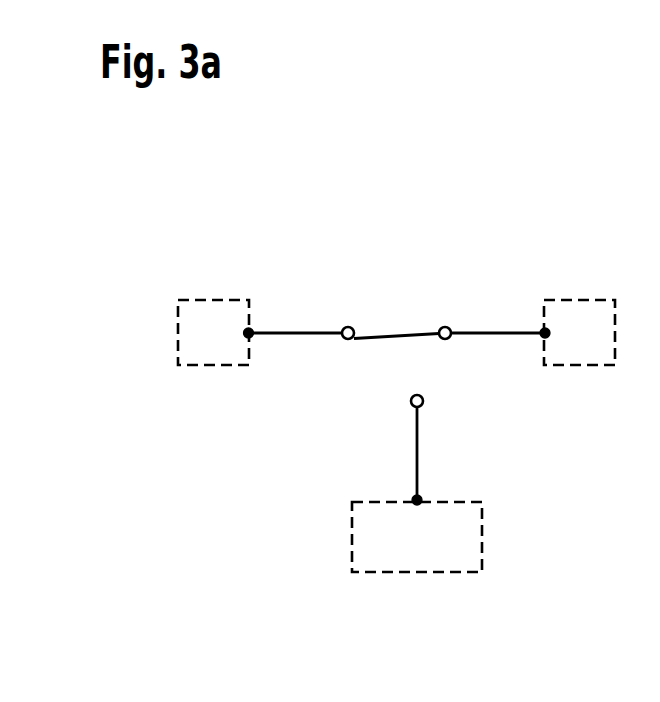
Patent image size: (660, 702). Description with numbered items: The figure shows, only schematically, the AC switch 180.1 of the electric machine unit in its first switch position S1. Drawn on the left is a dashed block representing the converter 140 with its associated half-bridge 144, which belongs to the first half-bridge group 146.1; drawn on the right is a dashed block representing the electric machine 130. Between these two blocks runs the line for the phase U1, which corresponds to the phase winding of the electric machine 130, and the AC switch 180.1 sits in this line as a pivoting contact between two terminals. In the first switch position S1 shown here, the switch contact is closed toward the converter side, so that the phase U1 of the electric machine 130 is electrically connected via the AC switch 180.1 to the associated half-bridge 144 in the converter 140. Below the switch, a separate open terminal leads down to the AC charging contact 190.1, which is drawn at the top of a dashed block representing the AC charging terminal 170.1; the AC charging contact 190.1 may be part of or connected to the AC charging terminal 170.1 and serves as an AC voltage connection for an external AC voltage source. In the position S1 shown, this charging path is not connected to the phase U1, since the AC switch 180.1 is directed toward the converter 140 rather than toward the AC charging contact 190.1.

The converter 140 is at (245, 286).
The half-bridge 144 is at (245, 286).
The first half-bridge group 146.1 is at (214, 299).
The electric machine 130 is at (580, 299).
The AC switch 180.1 is at (397, 336).
The phase U1 is at (500, 333).
The first switch position S1 is at (338, 395).
The AC charging contact 190.1 is at (418, 500).
The AC charging terminal 170.1 is at (483, 536).